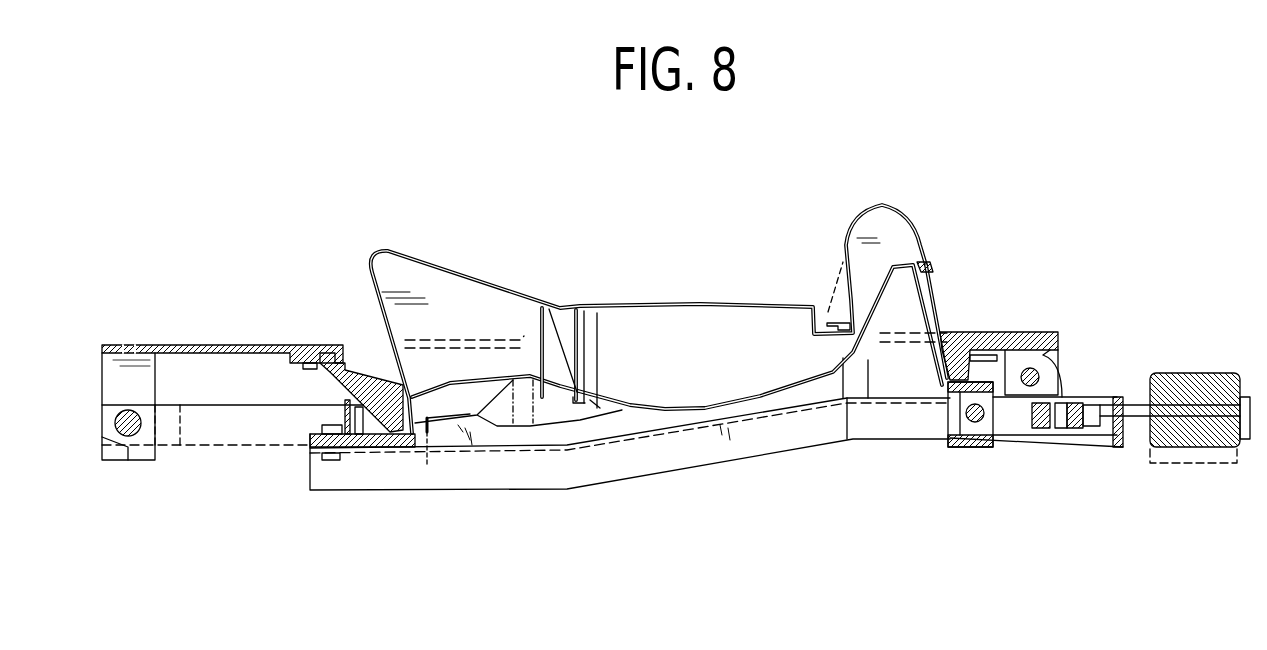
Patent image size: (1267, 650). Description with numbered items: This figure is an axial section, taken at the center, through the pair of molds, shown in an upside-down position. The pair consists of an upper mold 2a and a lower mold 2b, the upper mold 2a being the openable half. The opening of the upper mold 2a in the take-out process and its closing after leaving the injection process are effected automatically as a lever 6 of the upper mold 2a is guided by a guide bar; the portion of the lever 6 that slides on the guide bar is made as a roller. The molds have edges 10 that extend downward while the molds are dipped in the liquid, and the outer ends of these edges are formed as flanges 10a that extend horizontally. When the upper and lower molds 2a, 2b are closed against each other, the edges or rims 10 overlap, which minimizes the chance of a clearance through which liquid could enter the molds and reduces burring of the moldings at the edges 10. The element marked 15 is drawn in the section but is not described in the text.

The upper mold 2a is at (760, 402).
The lower mold 2b is at (772, 305).
The lever 6 is at (1193, 372).
The edges 10 is at (395, 395).
The flanges 10a is at (372, 447).
The pivot pin 15 is at (130, 436).